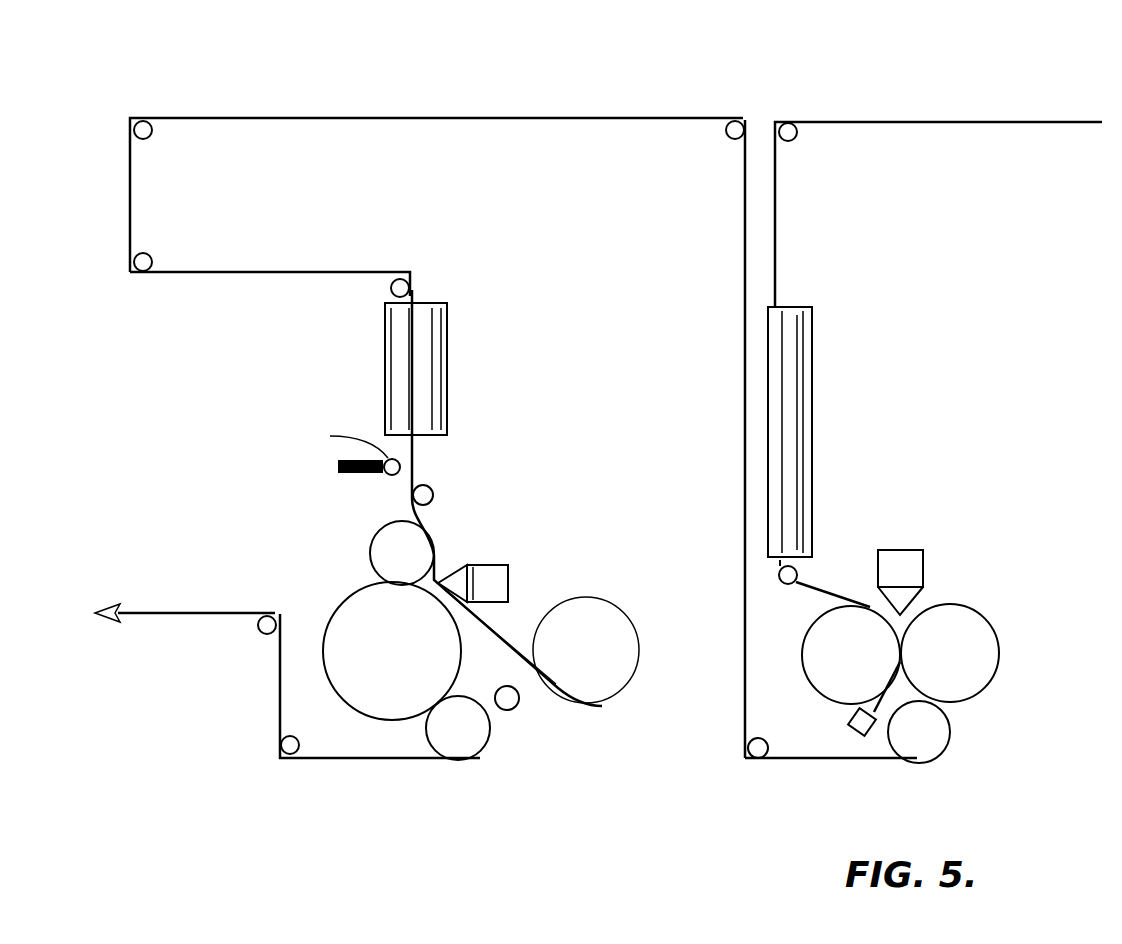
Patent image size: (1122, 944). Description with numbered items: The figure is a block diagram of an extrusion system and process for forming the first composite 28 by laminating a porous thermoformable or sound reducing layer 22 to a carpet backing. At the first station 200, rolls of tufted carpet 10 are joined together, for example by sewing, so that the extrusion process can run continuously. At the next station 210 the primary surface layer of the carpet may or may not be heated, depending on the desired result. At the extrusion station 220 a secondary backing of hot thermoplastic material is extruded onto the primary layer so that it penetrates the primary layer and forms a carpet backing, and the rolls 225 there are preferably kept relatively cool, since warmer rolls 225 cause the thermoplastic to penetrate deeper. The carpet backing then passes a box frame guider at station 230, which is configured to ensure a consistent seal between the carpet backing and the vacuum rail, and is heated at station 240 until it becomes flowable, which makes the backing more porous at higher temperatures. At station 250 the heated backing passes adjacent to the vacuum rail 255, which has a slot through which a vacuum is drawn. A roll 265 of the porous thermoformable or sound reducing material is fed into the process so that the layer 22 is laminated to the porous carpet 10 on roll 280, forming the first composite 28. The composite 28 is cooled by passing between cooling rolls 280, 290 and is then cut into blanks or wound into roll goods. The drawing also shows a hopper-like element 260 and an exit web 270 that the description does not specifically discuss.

The joining of rolls of tufted carpet 200 is at (898, 107).
The box frame guider 230 is at (362, 207).
The carpet backing heating 240 is at (505, 400).
The vacuum rail stage 250 is at (290, 463).
The vacuum rail 255 is at (365, 475).
The tufted carpet 10 is at (428, 517).
The hopper 260 is at (448, 537).
The cooling roll 290 is at (414, 563).
The roll 280 is at (406, 658).
The roll of porous thermoformable material 265 is at (636, 677).
The porous thermoformable layer 22 is at (528, 673).
The output web 270 is at (187, 658).
The first composite 28 is at (343, 767).
The primary surface layer heating 210 is at (862, 433).
The secondary backing extrusion 220 is at (947, 557).
The rolls 225 is at (998, 657).